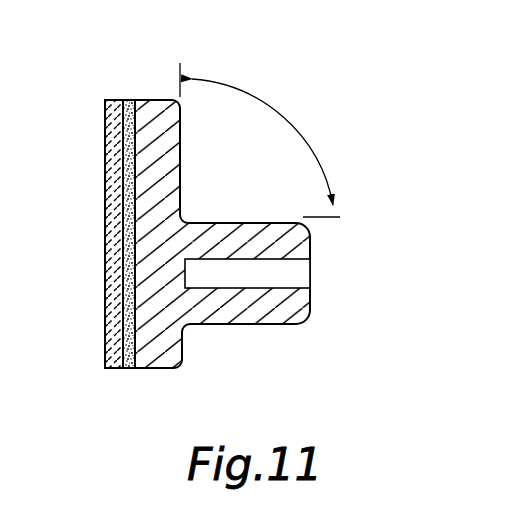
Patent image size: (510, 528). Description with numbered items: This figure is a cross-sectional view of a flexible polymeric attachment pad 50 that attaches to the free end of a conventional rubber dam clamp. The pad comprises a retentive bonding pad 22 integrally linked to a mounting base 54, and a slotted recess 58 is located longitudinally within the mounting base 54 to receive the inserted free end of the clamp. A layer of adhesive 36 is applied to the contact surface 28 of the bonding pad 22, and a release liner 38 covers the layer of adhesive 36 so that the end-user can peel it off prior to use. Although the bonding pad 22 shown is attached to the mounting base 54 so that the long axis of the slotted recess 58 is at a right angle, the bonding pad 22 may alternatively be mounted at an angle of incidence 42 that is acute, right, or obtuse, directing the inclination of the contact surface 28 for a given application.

The polymeric attachment pad 50 is at (116, 80).
The bonding pad 22 is at (158, 100).
The release liner 38 is at (112, 370).
The layer of adhesive 36 is at (128, 370).
The contact surface 28 is at (136, 368).
The mounting base 54 is at (218, 325).
The slotted recess 58 is at (258, 272).
The angle of incidence 42 is at (273, 104).